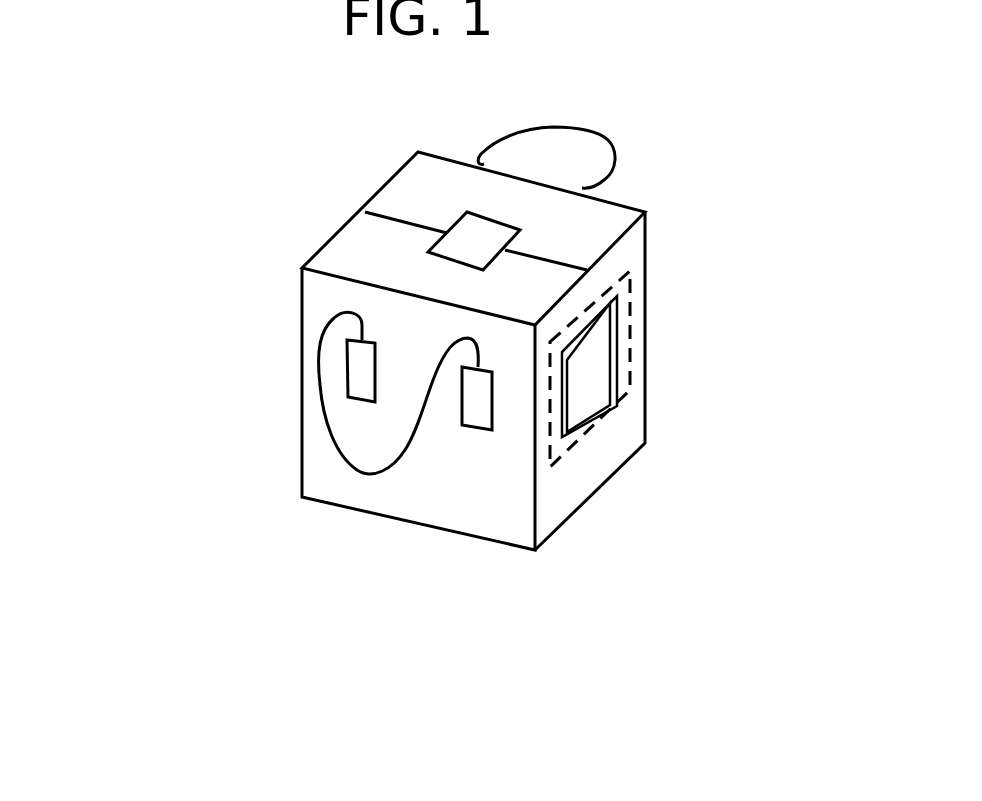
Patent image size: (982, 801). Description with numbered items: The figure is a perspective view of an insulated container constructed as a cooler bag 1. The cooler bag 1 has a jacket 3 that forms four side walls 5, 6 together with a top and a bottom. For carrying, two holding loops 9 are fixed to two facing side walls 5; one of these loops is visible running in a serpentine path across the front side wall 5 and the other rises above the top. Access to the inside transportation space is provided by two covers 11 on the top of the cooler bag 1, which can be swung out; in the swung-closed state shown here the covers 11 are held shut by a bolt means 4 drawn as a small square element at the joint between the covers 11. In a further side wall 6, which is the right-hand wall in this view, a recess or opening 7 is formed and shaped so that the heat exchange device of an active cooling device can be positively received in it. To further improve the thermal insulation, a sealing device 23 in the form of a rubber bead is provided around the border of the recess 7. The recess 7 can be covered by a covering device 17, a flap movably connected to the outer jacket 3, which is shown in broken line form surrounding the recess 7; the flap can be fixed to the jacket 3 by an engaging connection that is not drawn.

The cooler bag 1 is at (235, 195).
The jacket 3 is at (302, 318).
The bolt means 4 is at (472, 230).
The side wall 5 is at (452, 158).
The side wall 6 is at (620, 437).
The recess 7 is at (590, 373).
The holding loop 9 is at (322, 390).
The cover 11 is at (530, 290).
The covering device 17 is at (556, 462).
The sealing device 23 is at (590, 407).